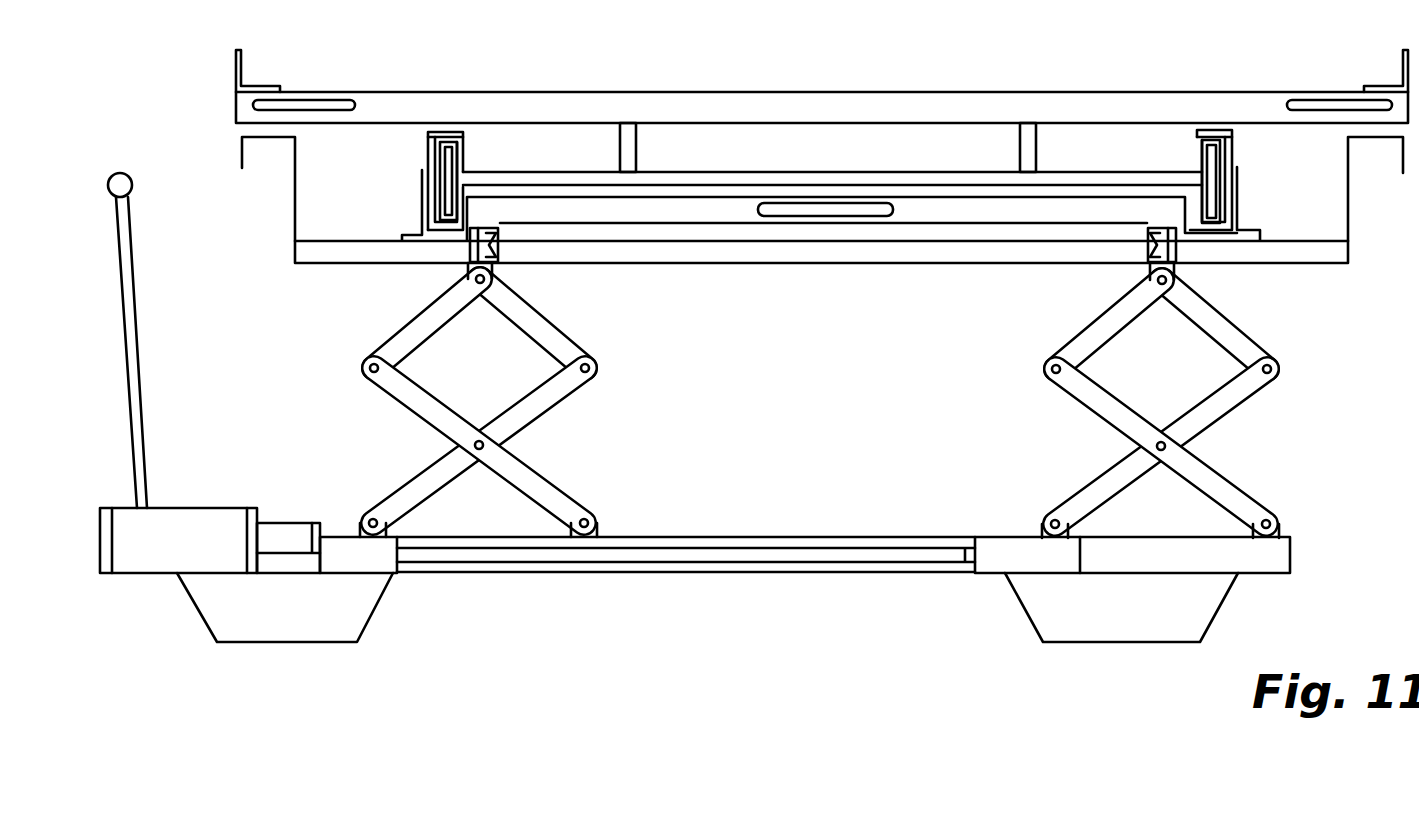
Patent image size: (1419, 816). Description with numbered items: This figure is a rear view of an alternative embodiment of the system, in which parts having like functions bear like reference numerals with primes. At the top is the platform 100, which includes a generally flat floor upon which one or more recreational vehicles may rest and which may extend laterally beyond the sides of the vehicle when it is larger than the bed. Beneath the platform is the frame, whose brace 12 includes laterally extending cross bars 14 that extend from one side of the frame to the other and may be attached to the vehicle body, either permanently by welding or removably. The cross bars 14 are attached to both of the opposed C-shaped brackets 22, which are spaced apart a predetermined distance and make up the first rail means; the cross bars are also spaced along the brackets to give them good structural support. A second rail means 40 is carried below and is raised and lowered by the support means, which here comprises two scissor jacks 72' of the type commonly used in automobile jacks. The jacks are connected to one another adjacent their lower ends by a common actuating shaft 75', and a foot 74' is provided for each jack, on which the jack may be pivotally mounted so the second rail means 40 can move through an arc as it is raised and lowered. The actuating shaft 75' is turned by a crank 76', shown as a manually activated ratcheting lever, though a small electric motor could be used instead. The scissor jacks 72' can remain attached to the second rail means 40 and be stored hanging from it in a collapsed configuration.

The platform means 100 is at (806, 100).
The brace 12 is at (294, 218).
The cross bars 14 is at (338, 250).
The C-shaped brackets 22 is at (428, 134).
The second rail means 40 is at (695, 207).
The scissor jacks 72' is at (778, 400).
The foot 74' is at (707, 607).
The common actuating shaft 75' is at (695, 562).
The crank 76' is at (102, 340).